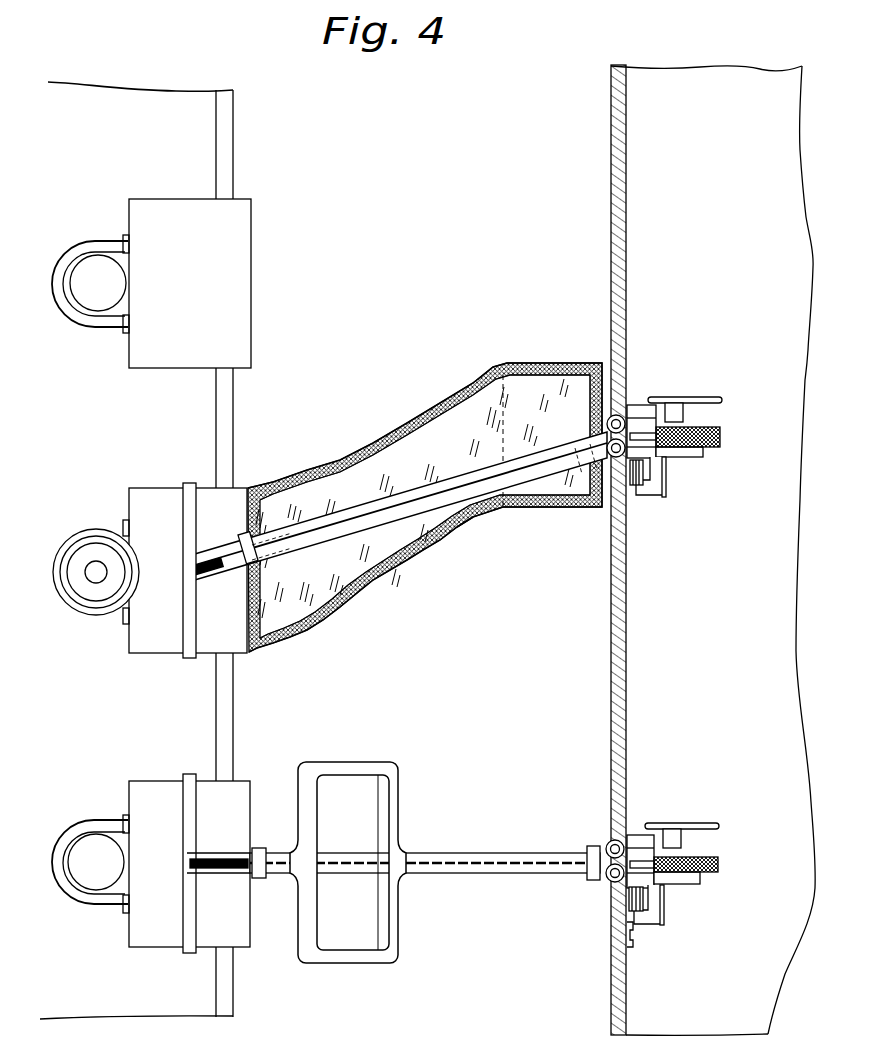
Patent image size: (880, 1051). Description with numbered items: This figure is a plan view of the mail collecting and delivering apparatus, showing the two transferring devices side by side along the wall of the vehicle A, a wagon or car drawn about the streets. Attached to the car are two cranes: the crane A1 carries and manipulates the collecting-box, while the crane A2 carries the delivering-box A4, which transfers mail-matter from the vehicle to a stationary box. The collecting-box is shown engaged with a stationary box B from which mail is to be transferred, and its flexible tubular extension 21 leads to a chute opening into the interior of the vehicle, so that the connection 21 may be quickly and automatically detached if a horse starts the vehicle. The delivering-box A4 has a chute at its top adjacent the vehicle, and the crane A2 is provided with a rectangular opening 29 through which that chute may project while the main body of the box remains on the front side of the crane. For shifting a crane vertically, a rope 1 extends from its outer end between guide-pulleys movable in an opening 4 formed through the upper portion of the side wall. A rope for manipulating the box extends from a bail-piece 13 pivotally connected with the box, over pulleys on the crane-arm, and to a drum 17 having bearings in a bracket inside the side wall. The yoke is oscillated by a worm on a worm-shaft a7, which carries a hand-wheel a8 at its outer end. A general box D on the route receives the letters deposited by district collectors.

The vehicle A is at (713, 550).
The crane A1 is at (451, 510).
The crane A2 is at (445, 850).
The delivering-box A4 is at (151, 864).
The stationary box B is at (150, 570).
The general box D is at (247, 292).
The rope 1 is at (401, 497).
The bail-piece 13 is at (203, 619).
The drum 17 is at (713, 447).
The flexible tubular extension 21 is at (424, 423).
The rectangular opening 29 is at (362, 785).
The opening 4 is at (678, 448).
The worm-shaft a7 is at (637, 912).
The hand-wheel a8 is at (663, 924).